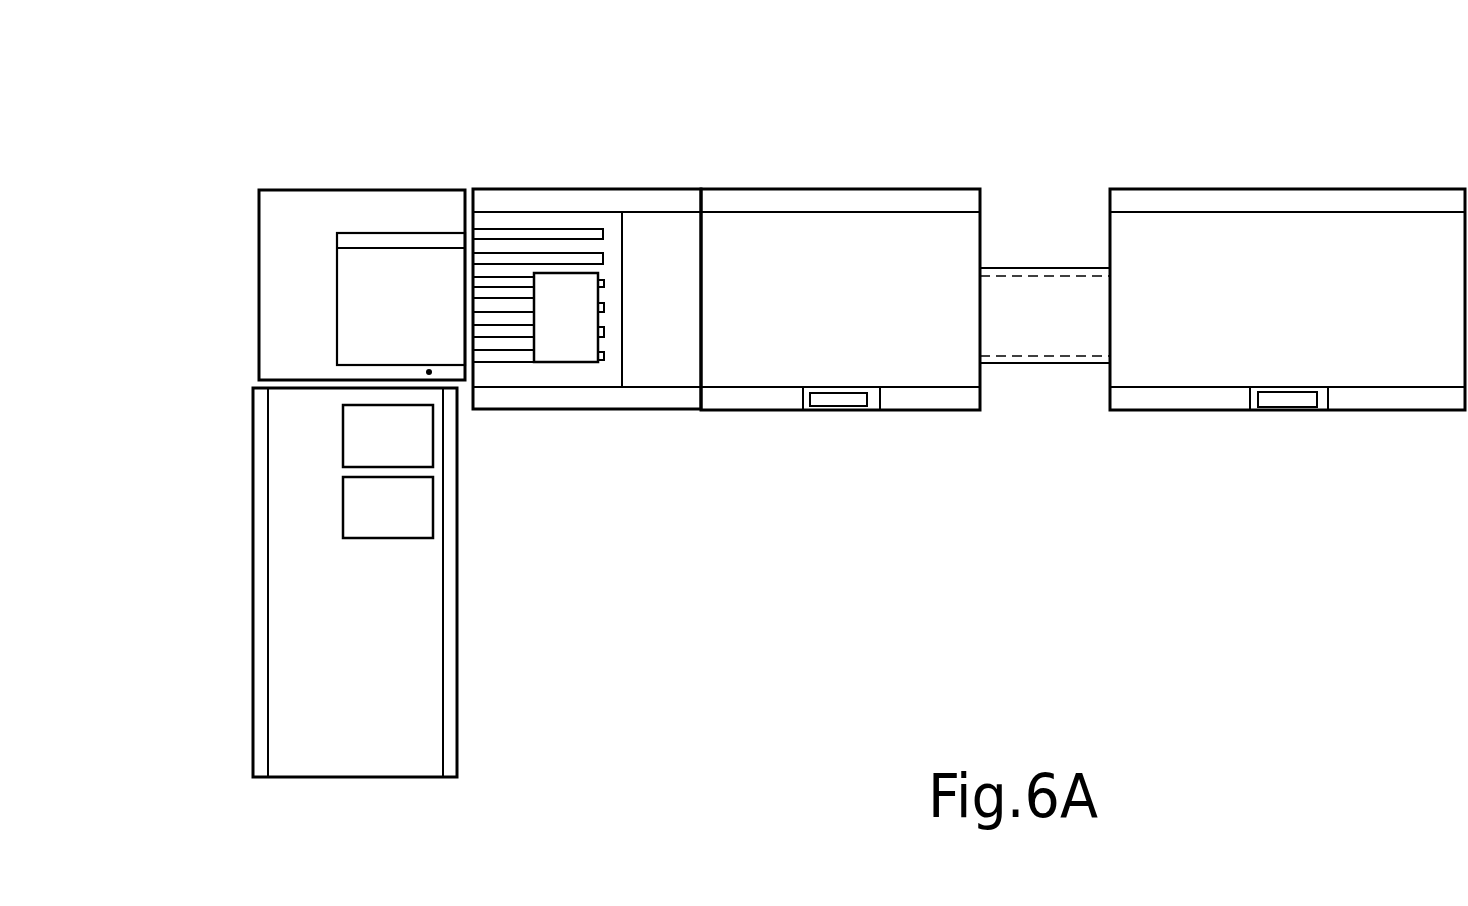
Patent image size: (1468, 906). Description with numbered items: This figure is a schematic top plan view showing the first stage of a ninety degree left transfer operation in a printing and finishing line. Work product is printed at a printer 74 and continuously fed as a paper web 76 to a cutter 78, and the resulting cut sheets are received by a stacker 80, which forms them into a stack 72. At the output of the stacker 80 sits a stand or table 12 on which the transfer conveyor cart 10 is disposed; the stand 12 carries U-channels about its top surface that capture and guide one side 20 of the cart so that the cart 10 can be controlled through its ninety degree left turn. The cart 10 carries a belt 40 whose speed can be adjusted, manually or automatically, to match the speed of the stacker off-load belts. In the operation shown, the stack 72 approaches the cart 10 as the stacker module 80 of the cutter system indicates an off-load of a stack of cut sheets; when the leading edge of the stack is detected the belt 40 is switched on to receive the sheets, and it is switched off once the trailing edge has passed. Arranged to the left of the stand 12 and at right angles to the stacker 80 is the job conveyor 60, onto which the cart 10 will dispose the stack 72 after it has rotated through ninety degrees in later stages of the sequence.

The stand 12 is at (248, 183).
The transfer conveyor 10 is at (380, 222).
The belt 40 is at (390, 330).
The stacker 80 is at (593, 177).
The stack 72 is at (560, 352).
The cutter 78 is at (825, 177).
The paper web 76 is at (1040, 277).
The printer 74 is at (1265, 177).
The job conveyor 60 is at (242, 530).
The side of the cart 20 is at (429, 372).